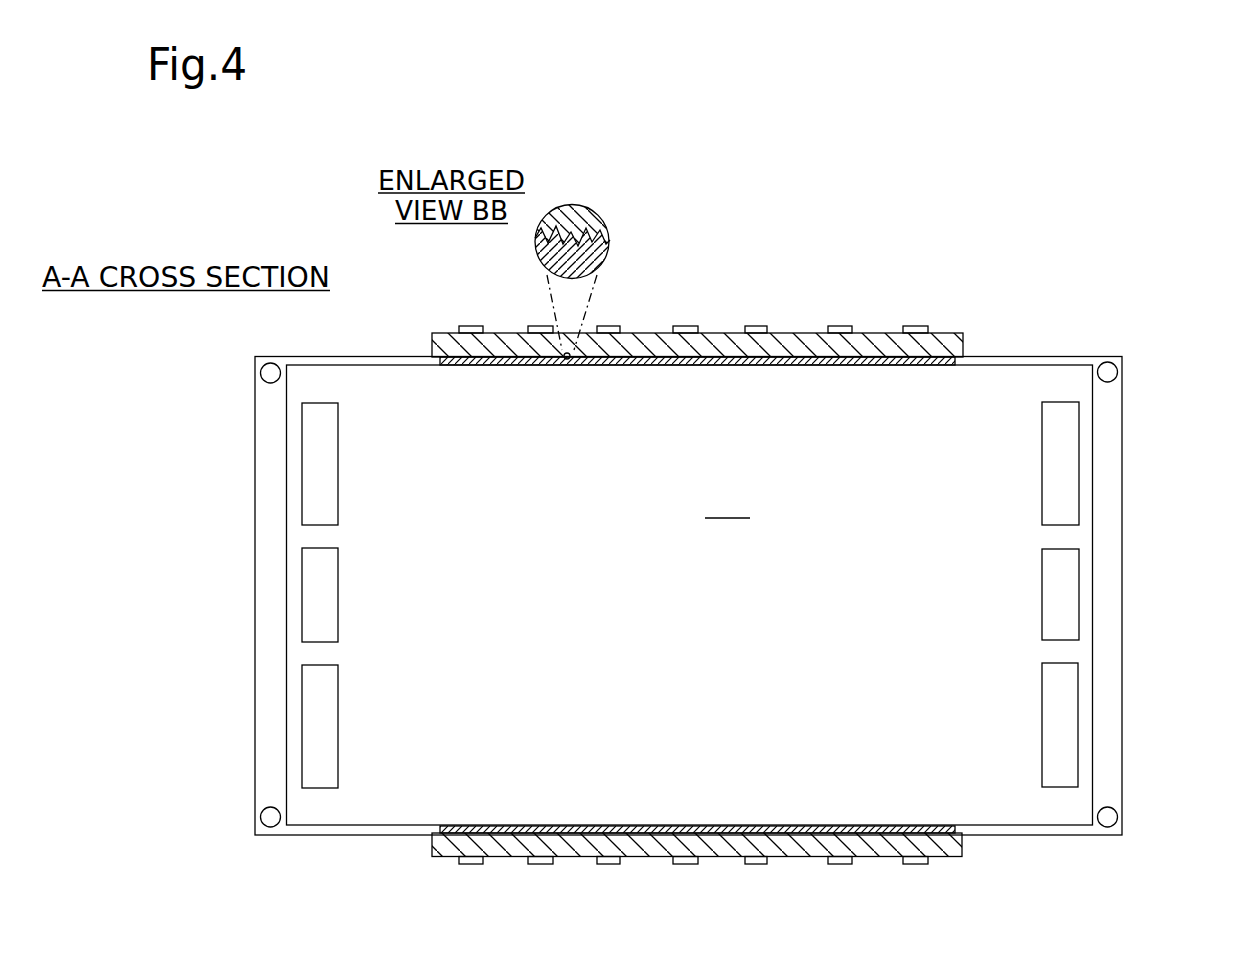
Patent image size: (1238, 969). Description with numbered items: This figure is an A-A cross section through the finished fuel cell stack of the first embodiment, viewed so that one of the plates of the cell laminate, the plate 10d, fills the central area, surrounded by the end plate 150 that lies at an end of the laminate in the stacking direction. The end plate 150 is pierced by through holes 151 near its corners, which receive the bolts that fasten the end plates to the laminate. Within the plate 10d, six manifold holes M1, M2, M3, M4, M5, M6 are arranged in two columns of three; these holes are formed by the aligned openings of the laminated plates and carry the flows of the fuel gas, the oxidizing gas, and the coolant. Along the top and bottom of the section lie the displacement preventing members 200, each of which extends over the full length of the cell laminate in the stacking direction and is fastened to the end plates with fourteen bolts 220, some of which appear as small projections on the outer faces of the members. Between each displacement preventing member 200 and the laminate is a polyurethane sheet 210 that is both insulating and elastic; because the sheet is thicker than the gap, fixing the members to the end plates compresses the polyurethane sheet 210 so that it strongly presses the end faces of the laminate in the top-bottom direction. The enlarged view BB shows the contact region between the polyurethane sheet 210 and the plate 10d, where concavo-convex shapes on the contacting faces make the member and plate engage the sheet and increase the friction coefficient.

The plate 10d is at (608, 255).
The end plate 150 is at (1070, 356).
The through hole 151 is at (1108, 357).
The displacement preventing member 200 is at (797, 333).
The polyurethane sheet 210 is at (570, 204).
The bolt 220 is at (471, 326).
The manifold hole M1 is at (312, 457).
The manifold hole M2 is at (312, 581).
The manifold hole M3 is at (318, 718).
The manifold hole M4 is at (1060, 718).
The manifold hole M5 is at (1058, 582).
The manifold hole M6 is at (1060, 460).